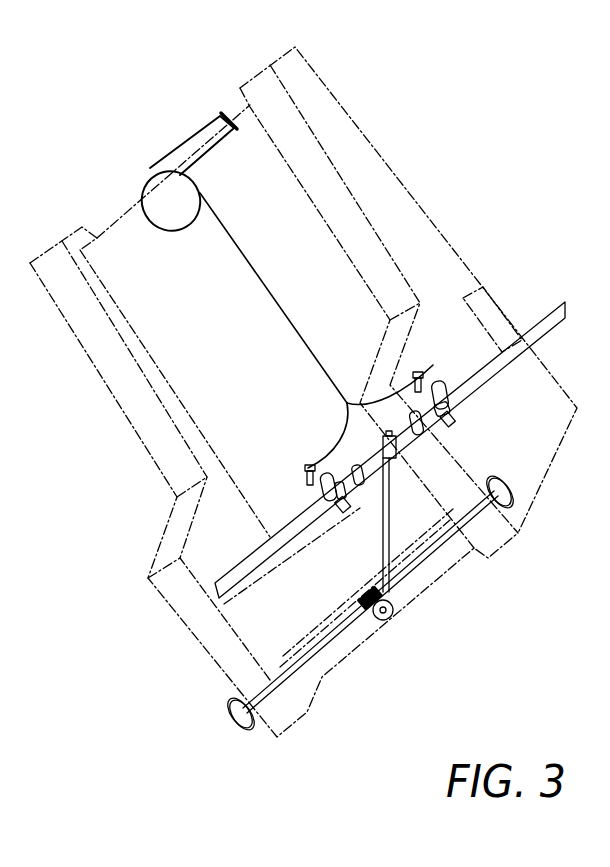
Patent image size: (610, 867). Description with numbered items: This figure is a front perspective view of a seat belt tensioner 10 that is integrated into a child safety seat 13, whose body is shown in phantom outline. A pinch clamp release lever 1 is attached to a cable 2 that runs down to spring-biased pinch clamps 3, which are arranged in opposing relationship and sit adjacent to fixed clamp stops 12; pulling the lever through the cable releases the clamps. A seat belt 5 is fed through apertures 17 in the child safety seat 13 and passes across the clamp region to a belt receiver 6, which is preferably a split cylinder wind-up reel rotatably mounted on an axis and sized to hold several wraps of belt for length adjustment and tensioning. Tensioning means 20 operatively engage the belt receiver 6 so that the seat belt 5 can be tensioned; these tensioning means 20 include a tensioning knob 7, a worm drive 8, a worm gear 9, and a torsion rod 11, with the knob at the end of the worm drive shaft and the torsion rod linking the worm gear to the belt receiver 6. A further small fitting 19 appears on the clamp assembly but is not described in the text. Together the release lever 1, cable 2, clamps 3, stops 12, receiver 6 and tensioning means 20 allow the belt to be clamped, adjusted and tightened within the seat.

The seat belt tensioner 10 is at (112, 64).
The pinch clamp release lever 1 is at (175, 172).
The cable 2 is at (273, 295).
The pinch clamps 3 is at (437, 381).
The seat belt 5 is at (543, 332).
The belt receiver 6 is at (397, 450).
The tensioning knob 7 is at (514, 490).
The worm drive 8 is at (330, 642).
The worm gear 9 is at (395, 612).
The torsion rod 11 is at (392, 533).
The fixed clamp stops 12 is at (453, 413).
The child safety seat 13 is at (424, 214).
The apertures 17 is at (500, 330).
The bolt 19 is at (420, 372).
The tensioning means 20 is at (368, 540).